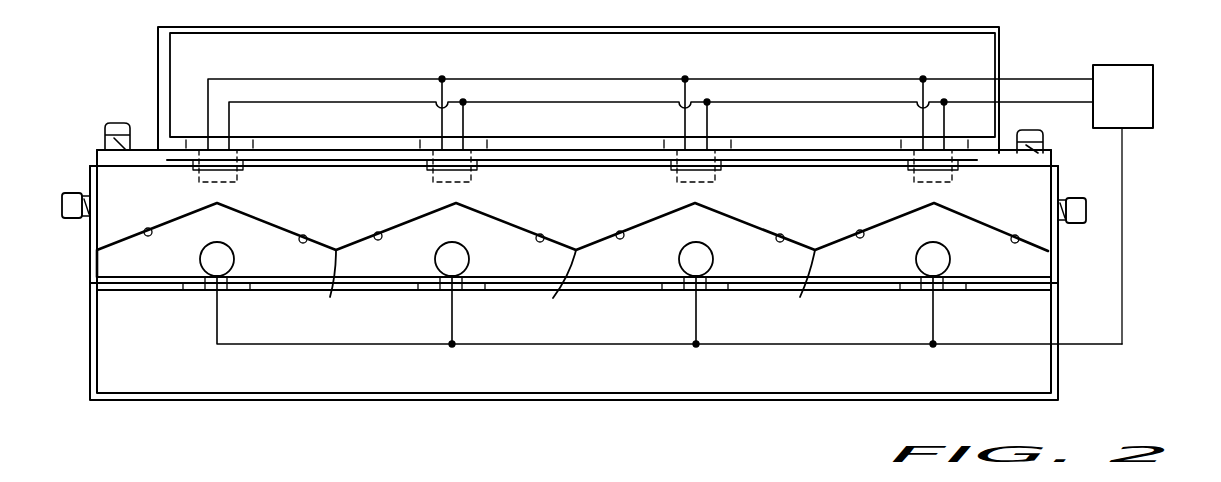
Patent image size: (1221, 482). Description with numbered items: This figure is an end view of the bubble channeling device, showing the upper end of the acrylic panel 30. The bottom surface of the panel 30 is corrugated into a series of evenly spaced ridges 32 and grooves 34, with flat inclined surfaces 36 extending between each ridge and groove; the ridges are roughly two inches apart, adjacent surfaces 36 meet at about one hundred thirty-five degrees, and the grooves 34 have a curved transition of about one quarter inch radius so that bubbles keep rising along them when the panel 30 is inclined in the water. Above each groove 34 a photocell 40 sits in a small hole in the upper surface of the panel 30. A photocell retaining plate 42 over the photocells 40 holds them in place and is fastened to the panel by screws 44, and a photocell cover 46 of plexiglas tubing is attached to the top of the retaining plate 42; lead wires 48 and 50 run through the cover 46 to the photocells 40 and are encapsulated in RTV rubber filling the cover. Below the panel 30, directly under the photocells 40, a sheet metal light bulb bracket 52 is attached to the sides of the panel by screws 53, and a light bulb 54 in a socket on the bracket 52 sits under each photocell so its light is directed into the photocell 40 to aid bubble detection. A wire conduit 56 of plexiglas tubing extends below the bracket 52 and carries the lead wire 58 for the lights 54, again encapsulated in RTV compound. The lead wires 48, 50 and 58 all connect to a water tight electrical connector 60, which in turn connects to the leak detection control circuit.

The acrylic panel 30 is at (1040, 246).
The ridges 32 is at (557, 289).
The grooves 34 is at (217, 206).
The flat inclined surfaces 36 is at (147, 228).
The photocell 40 is at (237, 182).
The photocell retaining plate 42 is at (1050, 162).
The screws 44 is at (105, 133).
The photocell cover 46 is at (162, 68).
The lead wire 48 is at (809, 79).
The lead wire 50 is at (767, 103).
The light bulb bracket 52 is at (90, 270).
The screws 53 is at (72, 194).
The light bulb 54 is at (225, 257).
The wire conduit 56 is at (90, 366).
The lead wire 58 is at (853, 346).
The water tight electrical connector 60 is at (1150, 88).